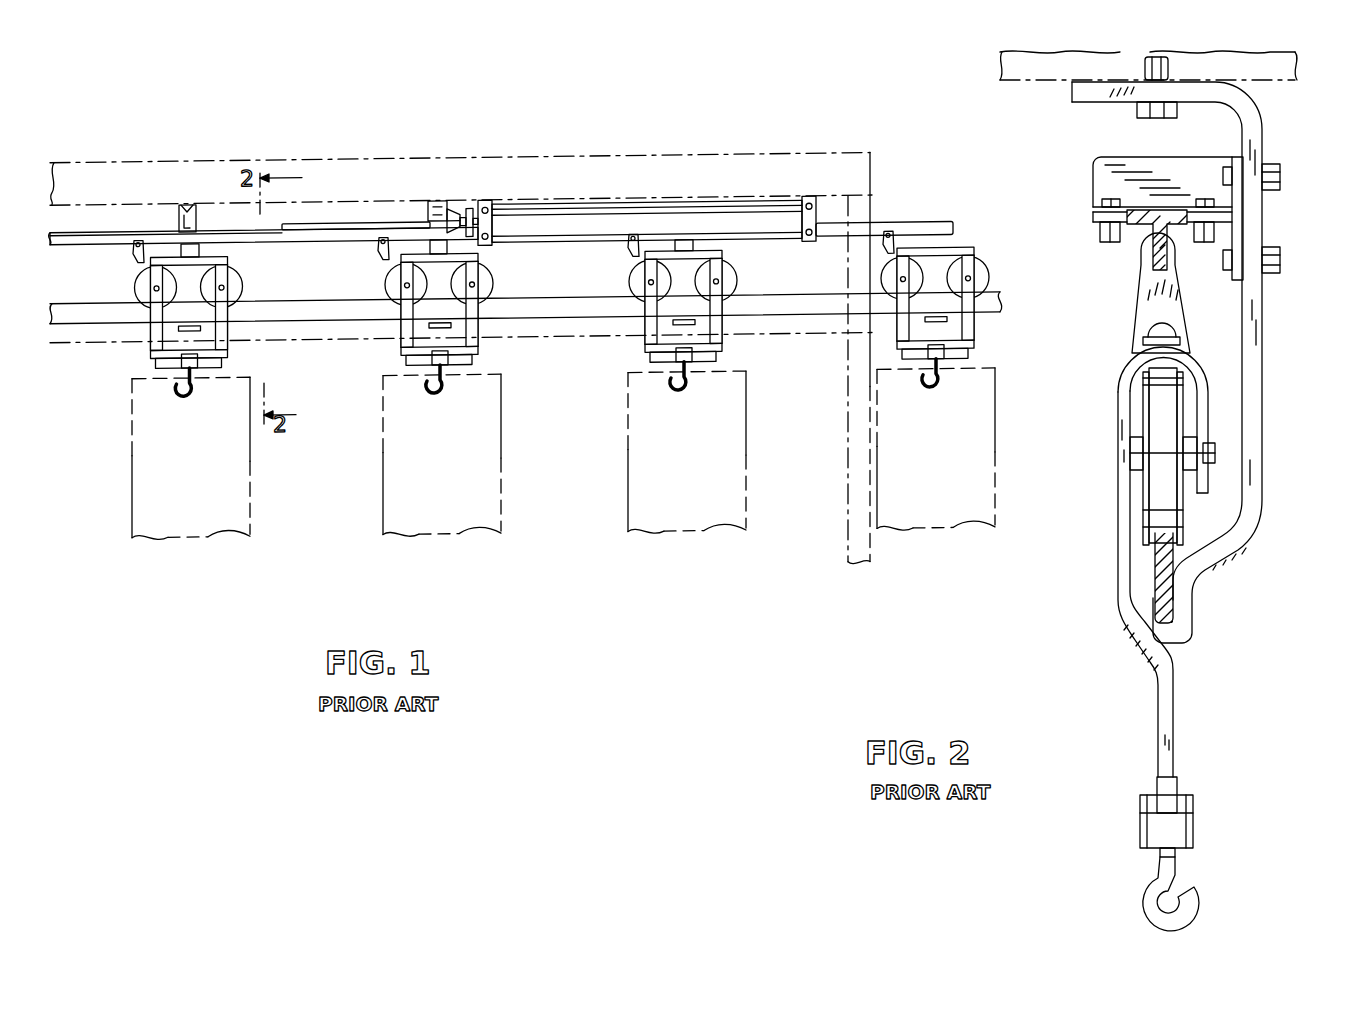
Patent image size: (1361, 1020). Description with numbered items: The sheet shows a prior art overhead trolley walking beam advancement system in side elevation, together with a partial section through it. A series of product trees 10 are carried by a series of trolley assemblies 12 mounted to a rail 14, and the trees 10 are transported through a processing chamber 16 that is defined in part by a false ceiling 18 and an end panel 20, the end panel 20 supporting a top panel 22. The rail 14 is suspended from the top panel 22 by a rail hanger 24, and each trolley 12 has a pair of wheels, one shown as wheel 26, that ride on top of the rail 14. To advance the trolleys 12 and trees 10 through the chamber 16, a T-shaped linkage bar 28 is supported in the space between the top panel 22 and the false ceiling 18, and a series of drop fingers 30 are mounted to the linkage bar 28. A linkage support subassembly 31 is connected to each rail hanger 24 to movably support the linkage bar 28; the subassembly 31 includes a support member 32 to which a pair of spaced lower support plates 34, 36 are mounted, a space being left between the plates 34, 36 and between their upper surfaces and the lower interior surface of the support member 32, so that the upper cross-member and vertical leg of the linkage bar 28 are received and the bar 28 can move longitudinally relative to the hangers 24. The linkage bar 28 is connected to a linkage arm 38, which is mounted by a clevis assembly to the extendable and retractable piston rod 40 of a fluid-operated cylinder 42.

In FIG. 1, the product trees 10 is at (132, 497).
In FIG. 1, the trolley assemblies 12 is at (256, 283).
In FIG. 2, the trolley assemblies 12 is at (1100, 461).
In FIG. 1, the rail 14 is at (522, 304).
In FIG. 2, the rail 14 is at (1158, 580).
In FIG. 1, the processing chamber 16 is at (558, 444).
In FIG. 1, the false ceiling 18 is at (527, 343).
In FIG. 1, the end panel 20 is at (843, 545).
In FIG. 1, the top panel 22 is at (723, 163).
In FIG. 2, the top panel 22 is at (1298, 73).
In FIG. 1, the rail hanger 24 is at (198, 217).
In FIG. 2, the rail hanger 24 is at (1264, 456).
In FIG. 1, the wheels 26 is at (240, 268).
In FIG. 2, the wheels 26 is at (1180, 527).
In FIG. 1, the T-shaped linkage bar 28 is at (50, 250).
In FIG. 2, the T-shaped linkage bar 28 is at (1143, 245).
In FIG. 1, the drop fingers 30 is at (130, 261).
In FIG. 2, the linkage support subassembly 31 is at (1068, 157).
In FIG. 2, the support member 32 is at (1136, 158).
In FIG. 2, the lower support plate 34 is at (1094, 222).
In FIG. 2, the lower support plate 36 is at (1187, 236).
In FIG. 1, the linkage arm 38 is at (330, 230).
In FIG. 1, the piston rod 40 is at (458, 222).
In FIG. 1, the fluid-operated cylinder 42 is at (591, 203).